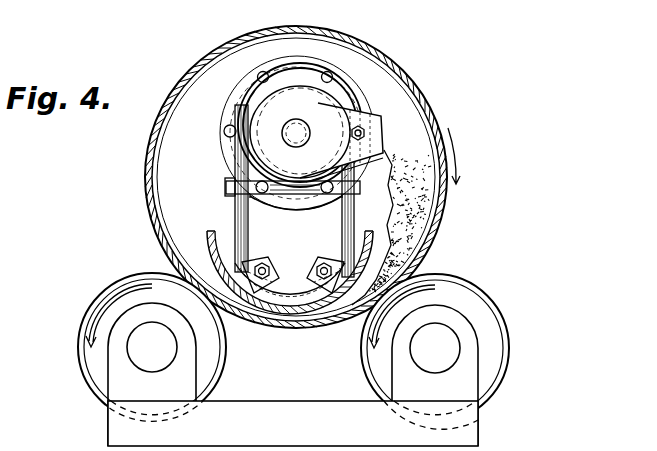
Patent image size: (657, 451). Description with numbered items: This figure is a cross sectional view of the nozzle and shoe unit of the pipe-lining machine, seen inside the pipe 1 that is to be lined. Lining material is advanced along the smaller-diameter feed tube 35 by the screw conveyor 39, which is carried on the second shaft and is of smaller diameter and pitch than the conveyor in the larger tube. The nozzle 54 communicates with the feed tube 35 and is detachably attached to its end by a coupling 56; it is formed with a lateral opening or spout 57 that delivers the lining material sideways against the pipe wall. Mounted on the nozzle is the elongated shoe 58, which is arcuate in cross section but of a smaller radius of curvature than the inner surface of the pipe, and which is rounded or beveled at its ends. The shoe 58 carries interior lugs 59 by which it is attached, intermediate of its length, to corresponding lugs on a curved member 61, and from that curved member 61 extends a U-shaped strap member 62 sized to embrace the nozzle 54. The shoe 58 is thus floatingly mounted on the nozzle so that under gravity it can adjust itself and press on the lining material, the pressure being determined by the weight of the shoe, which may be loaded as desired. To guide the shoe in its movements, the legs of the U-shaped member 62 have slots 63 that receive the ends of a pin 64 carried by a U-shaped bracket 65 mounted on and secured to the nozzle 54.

The drum 1 is at (438, 227).
The feed tube 35 is at (223, 131).
The screw conveyor 39 is at (232, 104).
The nozzle 54 is at (318, 116).
The coupling 56 is at (356, 92).
The lateral opening or spout 57 is at (388, 134).
The shoe 58 is at (284, 328).
The interior lugs 59 is at (328, 257).
The curved member 61 is at (278, 306).
The U-shaped strap member 62 is at (236, 156).
The slots 63 is at (250, 200).
The pin 64 is at (226, 187).
The U-shaped bracket 65 is at (397, 223).